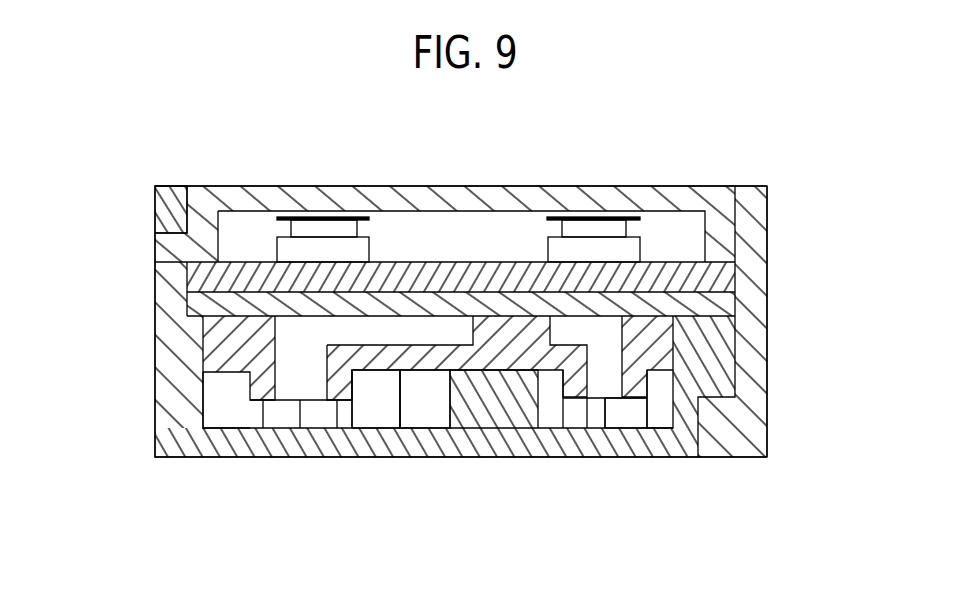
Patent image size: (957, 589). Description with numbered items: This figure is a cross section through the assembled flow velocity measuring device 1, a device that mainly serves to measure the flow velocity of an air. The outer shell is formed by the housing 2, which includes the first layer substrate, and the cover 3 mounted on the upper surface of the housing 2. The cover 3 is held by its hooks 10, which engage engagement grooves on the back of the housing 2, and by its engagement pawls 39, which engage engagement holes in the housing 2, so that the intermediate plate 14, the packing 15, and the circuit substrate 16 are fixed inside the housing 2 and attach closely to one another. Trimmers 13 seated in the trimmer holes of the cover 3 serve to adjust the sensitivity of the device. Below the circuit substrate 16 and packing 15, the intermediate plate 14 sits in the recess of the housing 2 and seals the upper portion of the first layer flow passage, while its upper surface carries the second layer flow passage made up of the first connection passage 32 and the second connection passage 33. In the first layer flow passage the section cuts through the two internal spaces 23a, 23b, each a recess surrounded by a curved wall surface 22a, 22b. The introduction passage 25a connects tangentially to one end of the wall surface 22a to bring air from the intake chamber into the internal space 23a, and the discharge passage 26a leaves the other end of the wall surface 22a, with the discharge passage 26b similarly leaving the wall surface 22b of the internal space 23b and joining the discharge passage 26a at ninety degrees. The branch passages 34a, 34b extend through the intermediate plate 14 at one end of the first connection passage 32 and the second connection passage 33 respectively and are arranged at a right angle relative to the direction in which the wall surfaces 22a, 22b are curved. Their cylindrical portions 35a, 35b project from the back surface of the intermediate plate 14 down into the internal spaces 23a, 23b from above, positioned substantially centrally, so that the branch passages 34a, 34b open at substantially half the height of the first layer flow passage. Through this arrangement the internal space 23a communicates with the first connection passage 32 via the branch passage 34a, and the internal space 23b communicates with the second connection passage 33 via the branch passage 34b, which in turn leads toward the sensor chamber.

The flow velocity measuring device 1 is at (133, 180).
The housing 2 is at (477, 458).
The cover 3 is at (432, 186).
The hooks 10 is at (767, 370).
The trimmers 13 is at (333, 215).
The intermediate plate 14 is at (252, 316).
The packing 15 is at (383, 280).
The circuit substrate 16 is at (640, 260).
The wall surface 22a is at (205, 410).
The wall surface 22b is at (653, 398).
The internal space 23a is at (397, 425).
The internal space 23b is at (646, 427).
The introduction passage 25a is at (268, 413).
The discharge passage 26a is at (427, 403).
The discharge passage 26b is at (607, 403).
The first connection passage 32 is at (385, 344).
The second connection passage 33 is at (553, 344).
The branch passage 34a is at (212, 362).
The branch passage 34b is at (603, 372).
The cylindrical portion 35a is at (334, 404).
The cylindrical portion 35b is at (575, 404).
The engagement pawls 39 is at (155, 252).